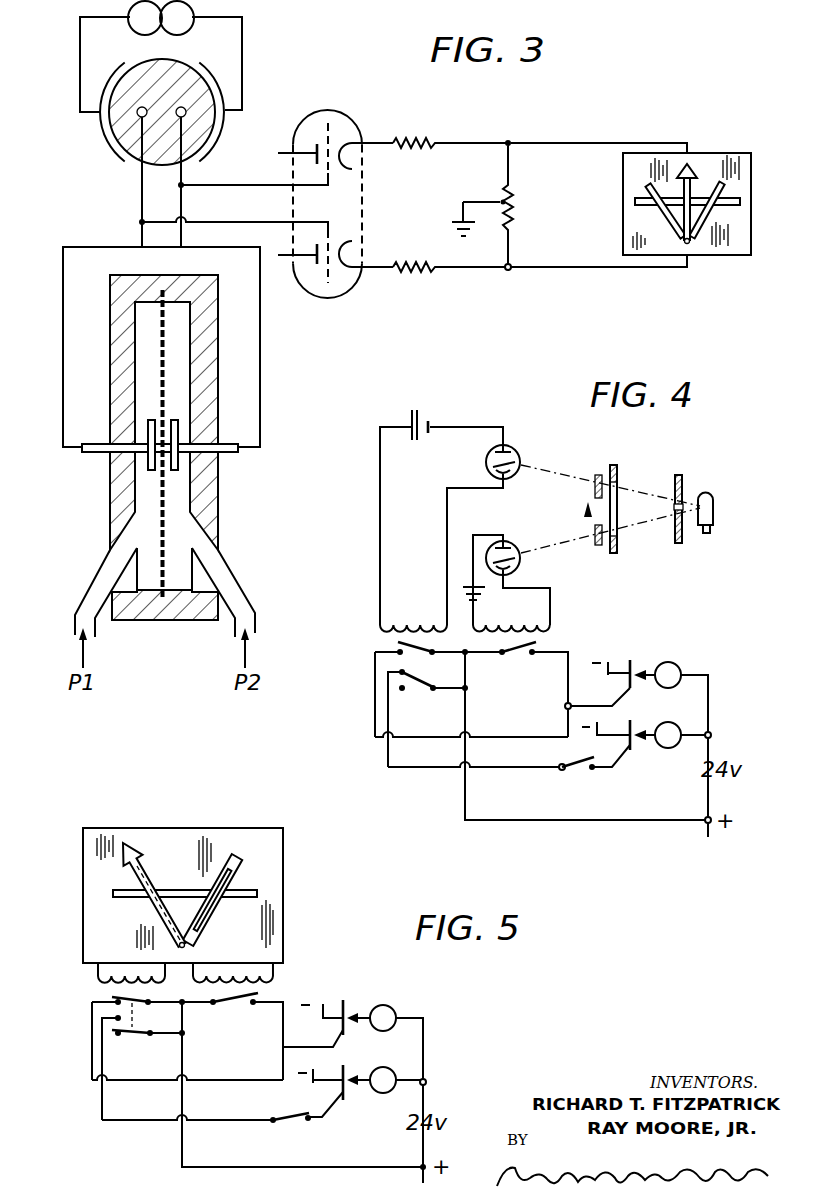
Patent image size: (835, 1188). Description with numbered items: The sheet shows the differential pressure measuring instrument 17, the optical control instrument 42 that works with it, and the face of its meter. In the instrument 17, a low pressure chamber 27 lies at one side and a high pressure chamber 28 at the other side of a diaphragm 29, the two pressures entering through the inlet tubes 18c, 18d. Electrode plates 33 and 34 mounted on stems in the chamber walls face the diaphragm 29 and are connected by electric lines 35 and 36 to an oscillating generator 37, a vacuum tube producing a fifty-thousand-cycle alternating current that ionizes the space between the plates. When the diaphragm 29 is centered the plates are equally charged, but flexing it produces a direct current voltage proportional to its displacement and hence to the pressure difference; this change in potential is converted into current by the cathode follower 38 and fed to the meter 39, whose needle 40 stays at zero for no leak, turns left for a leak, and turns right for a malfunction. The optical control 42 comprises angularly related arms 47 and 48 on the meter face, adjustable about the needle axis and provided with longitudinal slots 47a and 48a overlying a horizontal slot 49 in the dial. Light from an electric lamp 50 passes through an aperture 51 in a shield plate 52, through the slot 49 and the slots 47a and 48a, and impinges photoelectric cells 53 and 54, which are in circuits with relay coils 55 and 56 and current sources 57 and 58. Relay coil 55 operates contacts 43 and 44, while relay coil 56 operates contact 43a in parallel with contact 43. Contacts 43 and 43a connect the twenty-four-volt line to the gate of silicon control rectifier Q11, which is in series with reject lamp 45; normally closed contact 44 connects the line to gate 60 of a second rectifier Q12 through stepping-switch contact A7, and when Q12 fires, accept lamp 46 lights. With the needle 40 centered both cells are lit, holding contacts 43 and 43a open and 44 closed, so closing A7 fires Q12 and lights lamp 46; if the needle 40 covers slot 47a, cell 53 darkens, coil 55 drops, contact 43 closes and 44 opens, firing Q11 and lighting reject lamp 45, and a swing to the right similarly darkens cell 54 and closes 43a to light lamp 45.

In FIG. 3, the differential pressure measuring instrument 17 is at (88, 494).
In FIG. 3, the pressure inlet tube 18c is at (78, 613).
In FIG. 3, the pressure inlet tube 18d is at (237, 598).
In FIG. 3, the low pressure chamber 27 is at (137, 356).
In FIG. 3, the high pressure chamber 28 is at (178, 365).
In FIG. 3, the diaphragm 29 is at (165, 320).
In FIG. 3, the electrode plate 33 is at (152, 428).
In FIG. 3, the electrode plate 34 is at (177, 430).
In FIG. 3, the electric line 35 is at (63, 314).
In FIG. 3, the electric line 36 is at (260, 312).
In FIG. 3, the oscillating generator 37 is at (112, 150).
In FIG. 3, the cathode follower 38 is at (350, 293).
In FIG. 3, the meter 39 is at (717, 153).
In FIG. 4, the meter 39 is at (615, 465).
In FIG. 5, the meter 39 is at (240, 817).
In FIG. 3, the needle 40 is at (694, 240).
In FIG. 4, the needle 40 is at (584, 509).
In FIG. 5, the needle 40 is at (141, 864).
In FIG. 4, the optical control instrument 42 is at (532, 430).
In FIG. 5, the optical control instrument 42 is at (301, 953).
In FIG. 4, the relay switch contact 43 is at (397, 643).
In FIG. 5, the relay switch contact 43 is at (137, 1003).
In FIG. 4, the relay switch contact 43a is at (513, 652).
In FIG. 5, the relay switch contact 43a is at (233, 1002).
In FIG. 4, the relay switch contact 44 is at (417, 683).
In FIG. 5, the relay switch contact 44 is at (138, 1036).
In FIG. 4, the reject lamp 45 is at (675, 665).
In FIG. 5, the reject lamp 45 is at (397, 1015).
In FIG. 4, the accept lamp 46 is at (673, 748).
In FIG. 5, the accept lamp 46 is at (397, 1072).
In FIG. 3, the adjustable arm 47 is at (672, 217).
In FIG. 4, the adjustable arm 47 is at (597, 474).
In FIG. 5, the adjustable arm 47 is at (157, 915).
In FIG. 4, the slot 47a is at (593, 490).
In FIG. 5, the slot 47a is at (138, 873).
In FIG. 3, the adjustable arm 48 is at (712, 212).
In FIG. 4, the adjustable arm 48 is at (598, 548).
In FIG. 5, the adjustable arm 48 is at (241, 853).
In FIG. 4, the slot 48a is at (595, 533).
In FIG. 5, the slot 48a is at (228, 873).
In FIG. 3, the horizontal slot 49 is at (740, 202).
In FIG. 4, the horizontal slot 49 is at (615, 530).
In FIG. 5, the horizontal slot 49 is at (235, 897).
In FIG. 4, the electric lamp 50 is at (717, 502).
In FIG. 4, the aperture 51 is at (681, 510).
In FIG. 4, the shield plate 52 is at (682, 486).
In FIG. 4, the photoelectric cell 53 is at (485, 468).
In FIG. 4, the photoelectric cell 54 is at (521, 568).
In FIG. 4, the relay coil 55 is at (414, 621).
In FIG. 5, the relay coil 55 is at (97, 978).
In FIG. 4, the relay coil 56 is at (511, 612).
In FIG. 5, the relay coil 56 is at (274, 978).
In FIG. 4, the source of current 57 is at (424, 417).
In FIG. 4, the source of current 58 is at (472, 583).
In FIG. 4, the gate 60 is at (623, 743).
In FIG. 5, the gate 60 is at (340, 1100).
In FIG. 4, the silicon control rectifier Q11 is at (632, 670).
In FIG. 5, the silicon control rectifier Q11 is at (347, 1012).
In FIG. 4, the silicon control rectifier Q12 is at (645, 750).
In FIG. 5, the silicon control rectifier Q12 is at (347, 1092).
In FIG. 4, the stepping switch contact A7 is at (571, 770).
In FIG. 5, the stepping switch contact A7 is at (283, 1127).